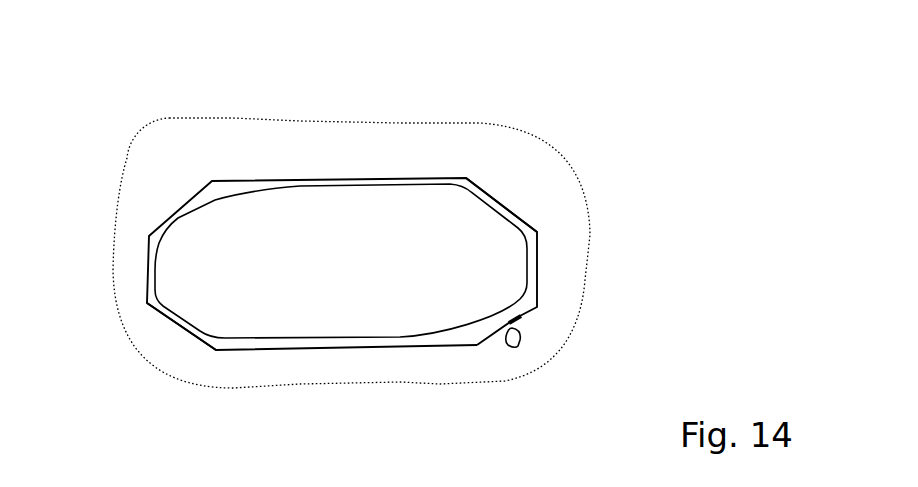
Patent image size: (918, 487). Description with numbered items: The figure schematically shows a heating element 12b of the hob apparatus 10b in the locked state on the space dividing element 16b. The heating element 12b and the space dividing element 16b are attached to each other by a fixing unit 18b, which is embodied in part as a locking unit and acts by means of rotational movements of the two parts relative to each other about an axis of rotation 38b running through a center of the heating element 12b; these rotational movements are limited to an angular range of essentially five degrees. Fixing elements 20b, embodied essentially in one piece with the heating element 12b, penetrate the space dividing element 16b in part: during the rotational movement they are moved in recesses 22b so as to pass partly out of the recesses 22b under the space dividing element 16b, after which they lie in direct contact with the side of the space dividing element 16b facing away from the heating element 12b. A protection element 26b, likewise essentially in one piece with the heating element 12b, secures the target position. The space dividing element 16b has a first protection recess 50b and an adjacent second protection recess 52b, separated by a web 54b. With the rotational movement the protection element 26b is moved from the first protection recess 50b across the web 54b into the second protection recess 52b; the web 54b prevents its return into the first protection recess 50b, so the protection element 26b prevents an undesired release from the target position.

The hob apparatus 10b is at (663, 97).
The heating element 12b is at (480, 230).
The space dividing element 16b is at (543, 167).
The fixing unit 18b is at (428, 158).
The fixing element 20b is at (445, 170).
The recess 22b is at (463, 165).
The protection element 26b is at (505, 333).
The axis of rotation 38b is at (344, 260).
The first protection recess 50b is at (533, 335).
The second protection recess 52b is at (540, 323).
The web 54b is at (531, 344).